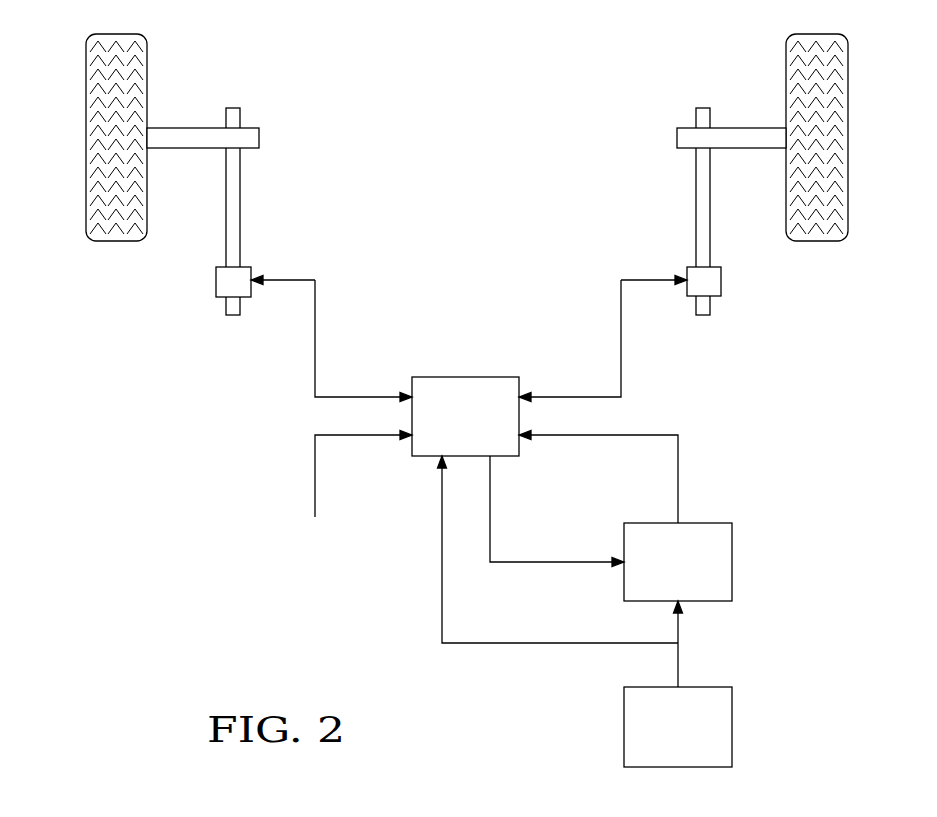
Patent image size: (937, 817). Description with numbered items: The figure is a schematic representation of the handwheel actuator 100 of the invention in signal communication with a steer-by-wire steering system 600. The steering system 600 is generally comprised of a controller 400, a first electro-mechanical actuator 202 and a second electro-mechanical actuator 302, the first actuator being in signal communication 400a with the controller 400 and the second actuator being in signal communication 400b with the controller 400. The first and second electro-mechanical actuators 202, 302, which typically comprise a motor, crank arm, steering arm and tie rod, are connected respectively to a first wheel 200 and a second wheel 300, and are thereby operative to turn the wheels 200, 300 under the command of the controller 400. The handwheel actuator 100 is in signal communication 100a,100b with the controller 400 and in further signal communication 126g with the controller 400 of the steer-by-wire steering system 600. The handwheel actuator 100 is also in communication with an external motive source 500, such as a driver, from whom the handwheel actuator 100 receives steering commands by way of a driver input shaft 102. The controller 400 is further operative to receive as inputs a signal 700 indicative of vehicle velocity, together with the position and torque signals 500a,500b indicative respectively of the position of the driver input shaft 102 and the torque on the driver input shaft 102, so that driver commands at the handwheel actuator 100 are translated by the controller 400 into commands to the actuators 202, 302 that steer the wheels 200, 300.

The handwheel actuator 100 is at (655, 569).
The signal communication 100a,100b is at (490, 502).
The driver input shaft 102 is at (678, 632).
The signal communication 126g is at (678, 470).
The first wheel 200 is at (849, 183).
The first electro-mechanical actuator 202 is at (677, 102).
The second wheel 300 is at (87, 178).
The second electro-mechanical actuator 302 is at (258, 95).
The controller 400 is at (443, 424).
The signal communication 400a is at (621, 382).
The signal communication 400b is at (314, 382).
The external motive source 500 is at (655, 736).
The position and torque signals 500a,500b is at (442, 580).
The steer-by-wire steering system 600 is at (230, 470).
The vehicle velocity signal 700 is at (353, 489).